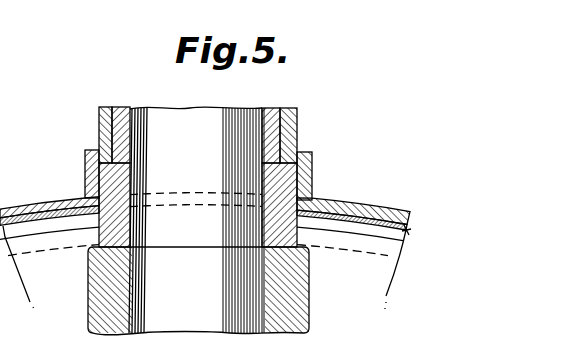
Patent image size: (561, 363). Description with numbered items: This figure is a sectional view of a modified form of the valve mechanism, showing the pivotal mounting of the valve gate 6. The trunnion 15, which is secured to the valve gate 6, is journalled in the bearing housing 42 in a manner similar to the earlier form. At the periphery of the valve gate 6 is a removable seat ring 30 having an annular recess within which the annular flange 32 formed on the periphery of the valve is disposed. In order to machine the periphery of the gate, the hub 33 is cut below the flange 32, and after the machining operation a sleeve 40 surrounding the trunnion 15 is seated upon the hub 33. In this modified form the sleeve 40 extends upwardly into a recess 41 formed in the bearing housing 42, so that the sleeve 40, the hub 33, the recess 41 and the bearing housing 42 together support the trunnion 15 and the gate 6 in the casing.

The trunnion 15 is at (158, 112).
The bearing housing 42 is at (297, 112).
The recess 41 is at (298, 152).
The sleeve 40 is at (313, 181).
The seat ring 30 is at (77, 221).
The annular flange 32 is at (42, 238).
The valve gate 6 is at (398, 267).
The hub 33 is at (297, 294).